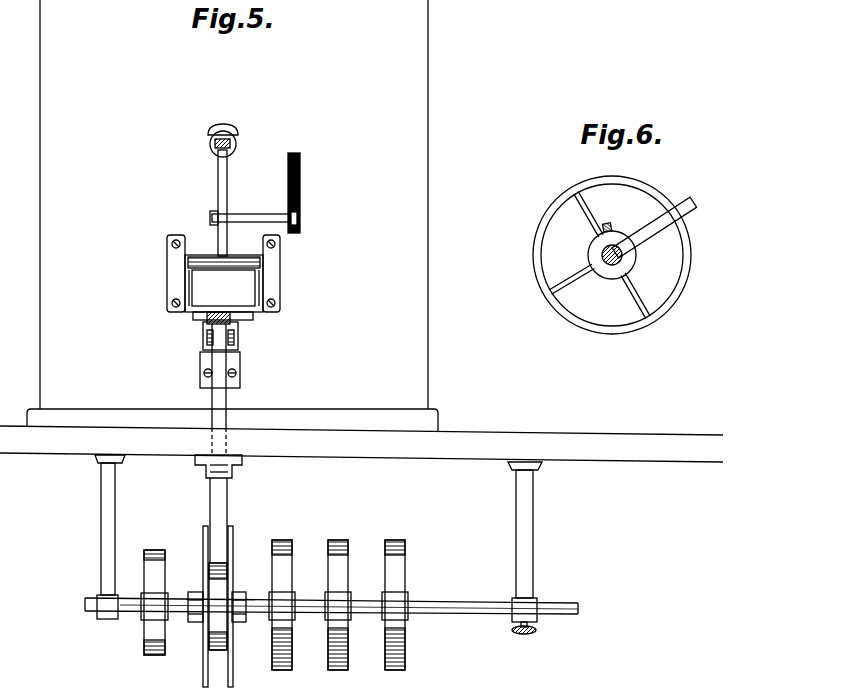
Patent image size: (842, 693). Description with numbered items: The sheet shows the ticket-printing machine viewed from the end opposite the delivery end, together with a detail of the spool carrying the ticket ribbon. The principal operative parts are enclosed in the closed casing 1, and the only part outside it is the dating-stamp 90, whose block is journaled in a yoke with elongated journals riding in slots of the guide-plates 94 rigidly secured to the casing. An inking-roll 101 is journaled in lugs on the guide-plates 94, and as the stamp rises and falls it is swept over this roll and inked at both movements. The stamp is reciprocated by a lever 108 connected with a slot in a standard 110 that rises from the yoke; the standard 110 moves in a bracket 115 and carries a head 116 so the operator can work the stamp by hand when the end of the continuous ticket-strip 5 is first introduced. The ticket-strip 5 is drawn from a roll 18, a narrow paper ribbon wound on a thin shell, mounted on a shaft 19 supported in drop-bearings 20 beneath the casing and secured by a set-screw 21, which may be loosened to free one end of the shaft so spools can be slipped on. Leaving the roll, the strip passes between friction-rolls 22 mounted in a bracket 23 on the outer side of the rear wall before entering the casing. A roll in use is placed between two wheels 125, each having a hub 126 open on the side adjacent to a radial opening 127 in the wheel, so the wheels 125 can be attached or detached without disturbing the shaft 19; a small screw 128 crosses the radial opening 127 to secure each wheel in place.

In FIG. 5, the closed casing 1 is at (232, 215).
In FIG. 5, the continuous ticket-strip 5 is at (218, 443).
In FIG. 5, the roll 18 is at (220, 583).
In FIG. 5, the shaft 19 is at (452, 601).
In FIG. 5, the drop-bearings 20 is at (101, 543).
In FIG. 5, the set-screw 21 is at (523, 637).
In FIG. 5, the friction-rolls 22 is at (223, 319).
In FIG. 5, the bracket 23 is at (240, 350).
In FIG. 5, the dating-stamp 90 is at (224, 283).
In FIG. 5, the guide-plates 94 is at (167, 260).
In FIG. 5, the inking-roll 101 is at (236, 250).
In FIG. 5, the lever 108 is at (300, 218).
In FIG. 5, the standard 110 is at (237, 203).
In FIG. 5, the bracket 115 is at (237, 144).
In FIG. 5, the head 116 is at (223, 132).
In FIG. 5, the wheels 125 is at (219, 598).
In FIG. 6, the wheels 125 is at (592, 255).
In FIG. 5, the hub 126 is at (225, 616).
In FIG. 6, the hub 126 is at (592, 250).
In FIG. 6, the radial opening 127 is at (683, 222).
In FIG. 6, the screw 128 is at (612, 226).